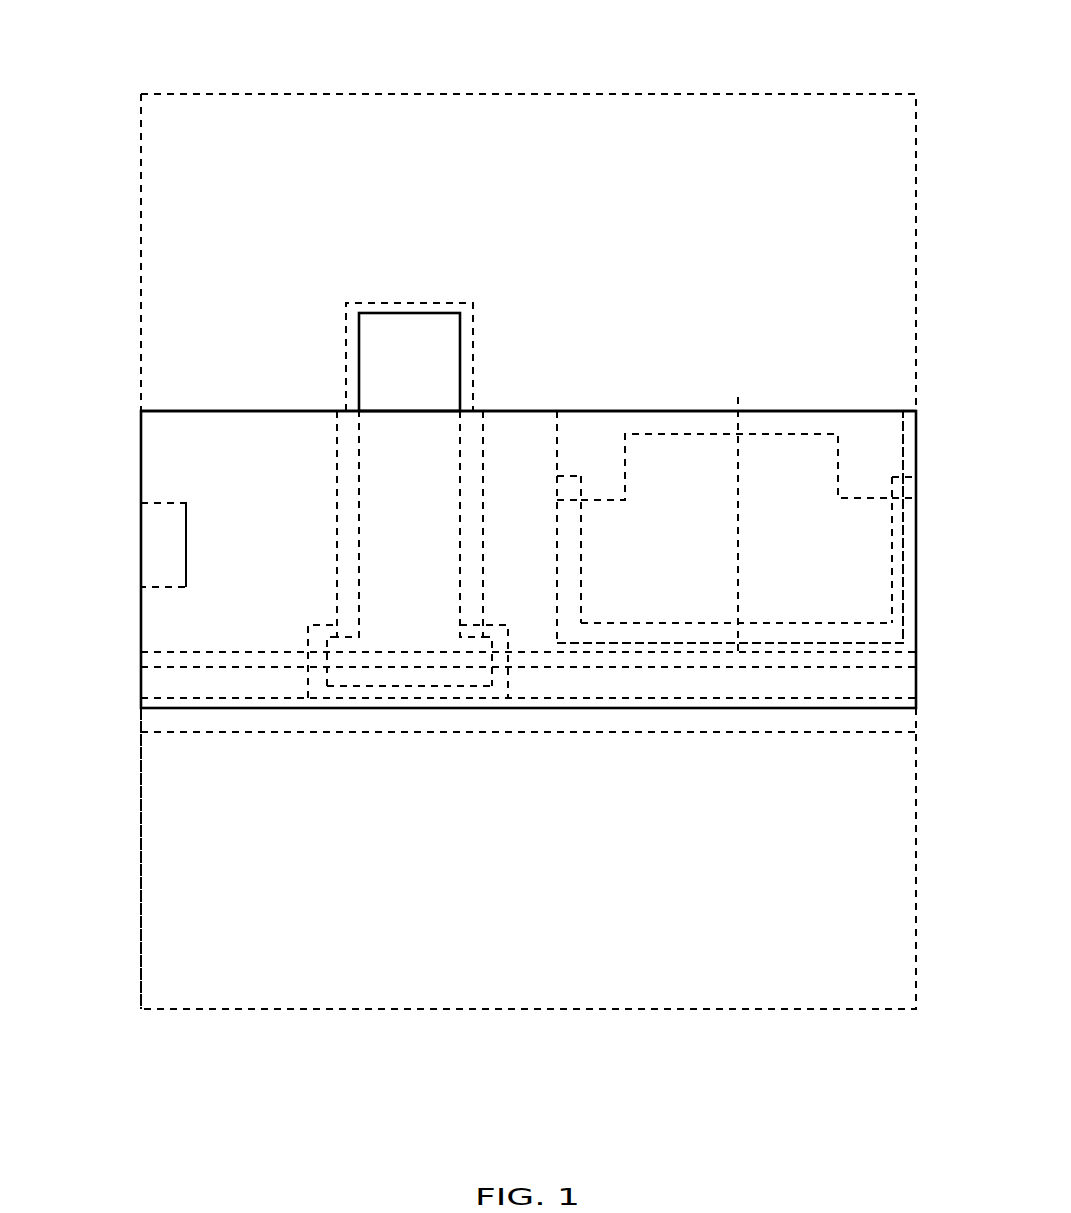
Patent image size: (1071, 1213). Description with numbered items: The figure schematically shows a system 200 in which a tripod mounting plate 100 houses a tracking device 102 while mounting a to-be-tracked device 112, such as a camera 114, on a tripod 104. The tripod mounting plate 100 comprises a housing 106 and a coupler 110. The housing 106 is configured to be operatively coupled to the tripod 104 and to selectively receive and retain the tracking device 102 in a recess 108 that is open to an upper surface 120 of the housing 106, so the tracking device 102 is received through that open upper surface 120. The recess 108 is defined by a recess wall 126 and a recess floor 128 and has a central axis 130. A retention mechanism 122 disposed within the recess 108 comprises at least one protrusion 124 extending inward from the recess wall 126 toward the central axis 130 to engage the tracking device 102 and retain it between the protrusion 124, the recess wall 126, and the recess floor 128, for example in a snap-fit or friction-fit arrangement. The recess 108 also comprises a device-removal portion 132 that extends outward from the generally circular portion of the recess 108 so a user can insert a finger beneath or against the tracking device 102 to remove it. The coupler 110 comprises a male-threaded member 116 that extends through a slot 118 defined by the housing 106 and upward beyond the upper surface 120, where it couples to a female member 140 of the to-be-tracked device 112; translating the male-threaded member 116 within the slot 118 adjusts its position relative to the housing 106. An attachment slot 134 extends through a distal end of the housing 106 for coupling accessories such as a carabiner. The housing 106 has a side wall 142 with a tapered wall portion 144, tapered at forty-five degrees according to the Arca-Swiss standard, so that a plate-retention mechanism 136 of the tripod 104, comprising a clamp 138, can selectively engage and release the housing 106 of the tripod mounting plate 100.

The system 200 is at (150, 66).
The tripod mounting plate 100 is at (114, 452).
The tracking device 102 is at (687, 434).
The tripod 104 is at (141, 770).
The housing 106 is at (141, 593).
The recess 108 is at (557, 502).
The coupler 110 is at (358, 367).
The to-be-tracked device 112 is at (141, 320).
The camera 114 is at (141, 207).
The male-threaded member 116 is at (458, 335).
The slot 118 is at (336, 533).
The upper surface 120 is at (519, 411).
The retention mechanism 122 is at (890, 485).
The protrusion 124 is at (900, 478).
The recess wall 126 is at (550, 572).
The recess floor 128 is at (762, 636).
The central axis 130 is at (738, 398).
The device-removal portion 132 is at (897, 440).
The attachment slot 134 is at (187, 535).
The plate-retention mechanism 136 is at (212, 667).
The clamp 138 is at (282, 667).
The female member 140 is at (473, 323).
The side wall 142 is at (141, 642).
The tapered wall portion 144 is at (715, 708).